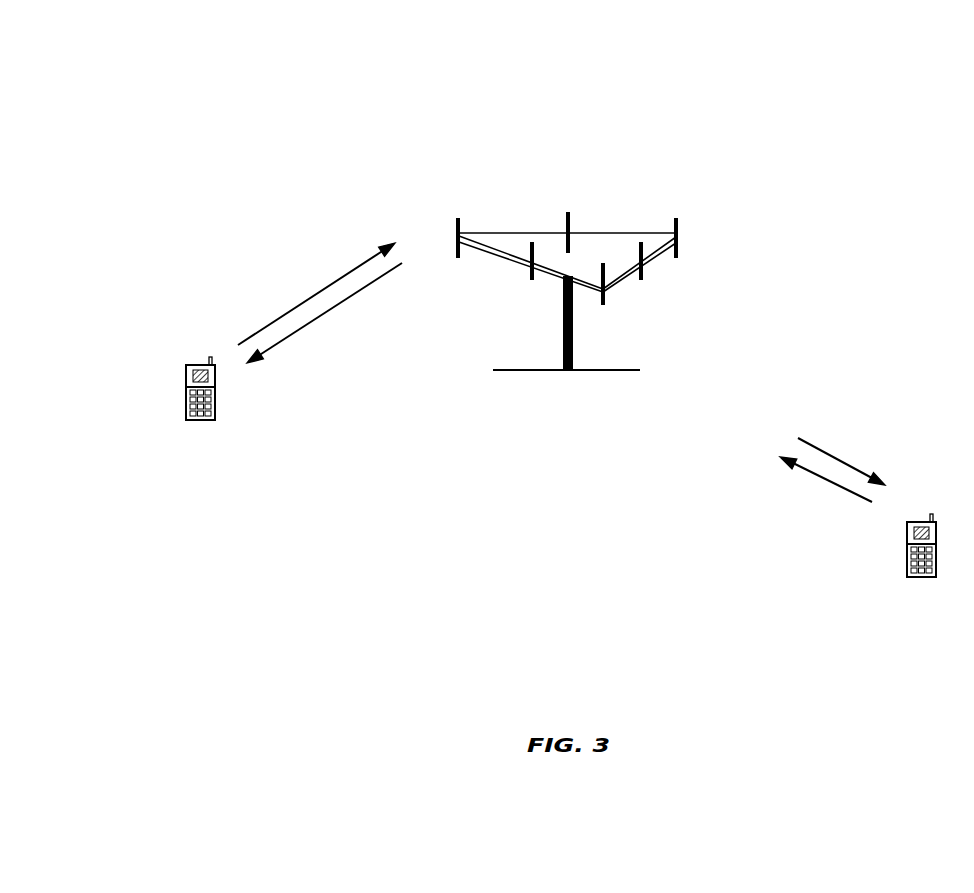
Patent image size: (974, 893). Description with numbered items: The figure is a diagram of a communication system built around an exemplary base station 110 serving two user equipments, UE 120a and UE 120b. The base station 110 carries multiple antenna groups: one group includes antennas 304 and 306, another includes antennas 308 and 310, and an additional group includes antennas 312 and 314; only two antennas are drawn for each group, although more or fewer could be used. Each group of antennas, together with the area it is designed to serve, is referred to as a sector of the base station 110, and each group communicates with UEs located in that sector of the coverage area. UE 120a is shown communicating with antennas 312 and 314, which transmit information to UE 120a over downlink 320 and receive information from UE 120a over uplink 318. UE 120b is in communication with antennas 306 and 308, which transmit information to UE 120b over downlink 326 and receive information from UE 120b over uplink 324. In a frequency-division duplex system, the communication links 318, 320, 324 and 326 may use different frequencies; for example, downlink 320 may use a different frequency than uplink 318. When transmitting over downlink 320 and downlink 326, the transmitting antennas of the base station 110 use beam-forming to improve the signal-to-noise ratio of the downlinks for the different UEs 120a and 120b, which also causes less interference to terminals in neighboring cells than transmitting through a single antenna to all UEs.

The base station 110 is at (543, 372).
The UE 120a is at (200, 363).
The UE 120b is at (922, 518).
The antenna 304 is at (606, 300).
The antenna 306 is at (645, 280).
The antenna 308 is at (681, 252).
The antenna 310 is at (568, 213).
The antenna 312 is at (461, 226).
The antenna 314 is at (526, 282).
The uplink 318 is at (316, 293).
The downlink 320 is at (333, 307).
The uplink 324 is at (813, 475).
The downlink 326 is at (848, 463).